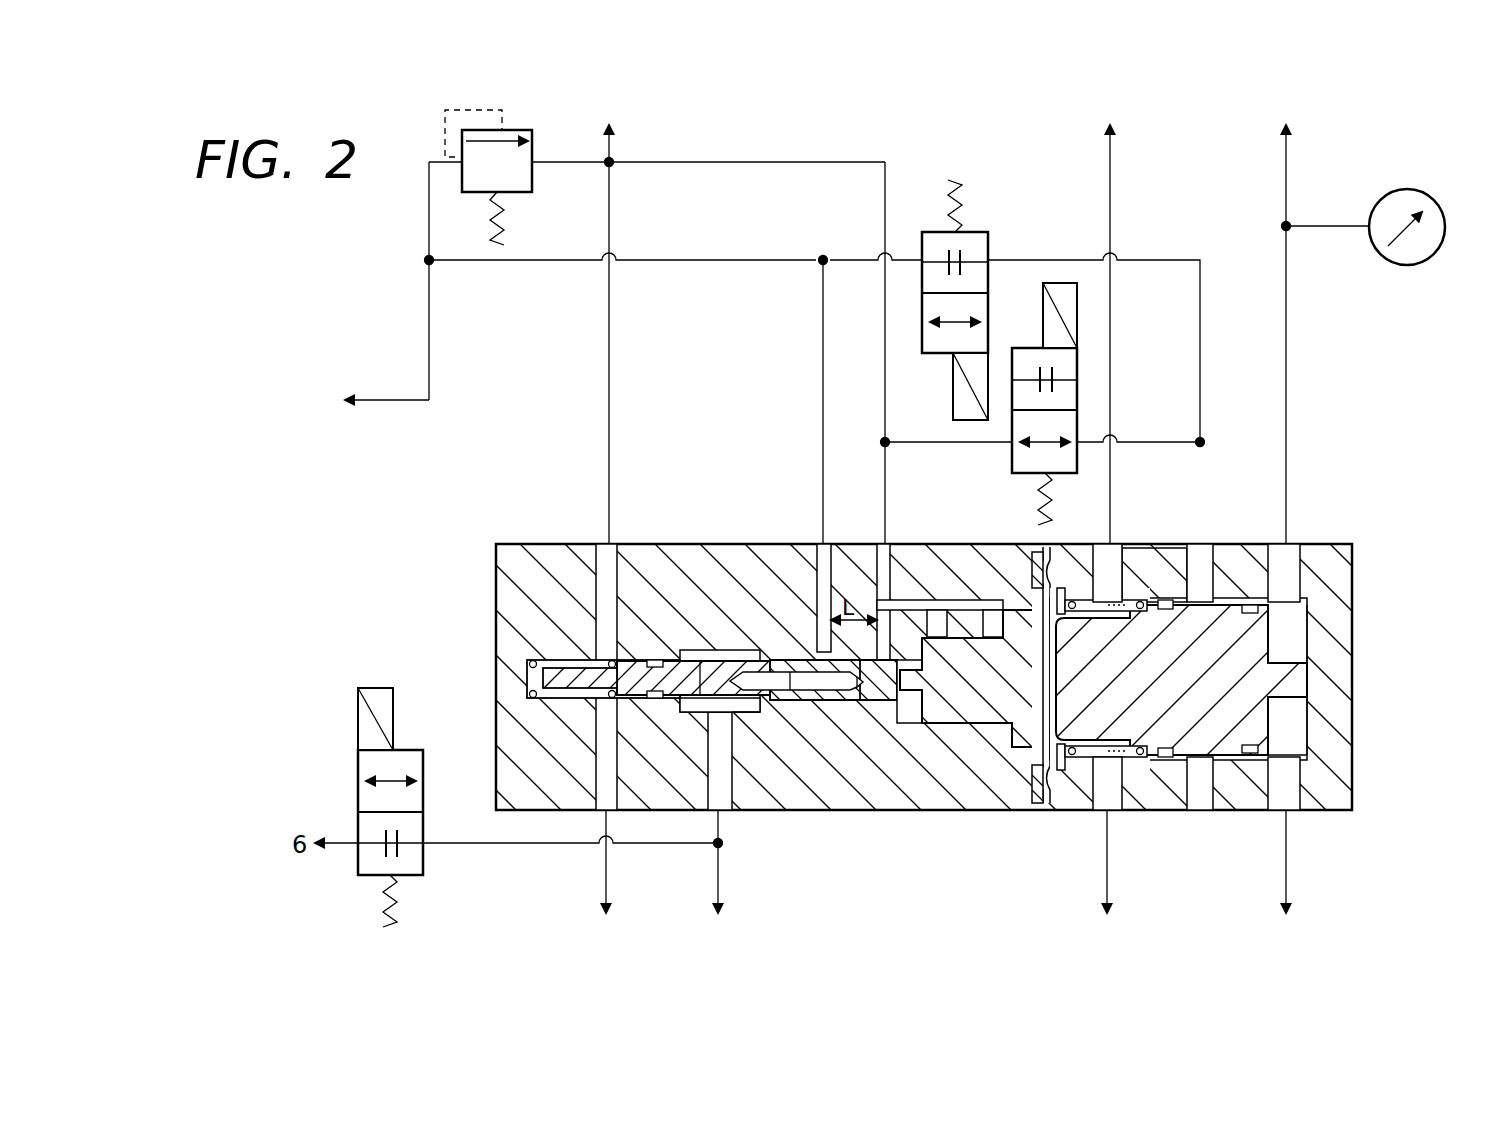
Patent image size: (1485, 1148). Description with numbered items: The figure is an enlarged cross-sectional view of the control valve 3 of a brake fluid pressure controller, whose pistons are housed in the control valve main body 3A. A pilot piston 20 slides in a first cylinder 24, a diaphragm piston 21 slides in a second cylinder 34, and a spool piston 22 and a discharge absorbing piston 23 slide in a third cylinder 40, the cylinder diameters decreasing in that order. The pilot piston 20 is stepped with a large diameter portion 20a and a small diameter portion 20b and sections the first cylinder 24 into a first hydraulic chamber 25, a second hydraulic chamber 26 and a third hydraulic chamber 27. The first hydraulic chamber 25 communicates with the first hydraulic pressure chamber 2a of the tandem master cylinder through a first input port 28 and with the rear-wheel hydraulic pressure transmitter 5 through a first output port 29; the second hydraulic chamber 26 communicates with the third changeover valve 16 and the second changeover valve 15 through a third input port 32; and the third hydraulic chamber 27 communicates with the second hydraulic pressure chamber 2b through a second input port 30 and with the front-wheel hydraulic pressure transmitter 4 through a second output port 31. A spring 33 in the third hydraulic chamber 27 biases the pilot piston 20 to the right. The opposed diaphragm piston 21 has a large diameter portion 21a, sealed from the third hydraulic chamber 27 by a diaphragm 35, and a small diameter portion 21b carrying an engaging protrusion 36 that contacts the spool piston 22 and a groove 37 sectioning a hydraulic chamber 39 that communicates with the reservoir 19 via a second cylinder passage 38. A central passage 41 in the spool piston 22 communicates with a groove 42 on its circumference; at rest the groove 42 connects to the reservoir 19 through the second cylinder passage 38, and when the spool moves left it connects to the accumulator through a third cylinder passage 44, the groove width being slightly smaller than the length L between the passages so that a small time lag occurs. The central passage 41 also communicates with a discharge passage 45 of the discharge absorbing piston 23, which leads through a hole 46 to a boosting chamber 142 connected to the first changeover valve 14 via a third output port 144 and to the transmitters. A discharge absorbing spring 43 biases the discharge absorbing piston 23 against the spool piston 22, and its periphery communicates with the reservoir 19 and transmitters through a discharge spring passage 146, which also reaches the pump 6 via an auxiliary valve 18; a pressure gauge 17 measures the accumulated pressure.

The first hydraulic pressure chamber 2a is at (1288, 314).
The second hydraulic pressure chamber 2b is at (1112, 314).
The control valve 3 is at (488, 598).
The control valve main body 3A is at (1335, 652).
The hydraulic pressure transmitter 4 is at (846, 880).
The hydraulic pressure transmitter 5 is at (1282, 880).
The pump 6 is at (375, 402).
The first changeover valve 14 is at (425, 875).
The second changeover valve 15 is at (985, 232).
The third changeover valve 16 is at (1010, 458).
The pressure gauge 17 is at (1388, 262).
The auxiliary valve 18 is at (520, 130).
The reservoir 19 is at (609, 314).
The pilot piston 20 is at (1250, 630).
The large diameter portion 20a is at (1120, 768).
The small diameter portion 20b is at (1085, 600).
The diaphragm piston 21 is at (945, 726).
The large diameter portion 21a is at (1030, 750).
The small diameter portion 21b is at (920, 728).
The spool piston 22 is at (790, 672).
The discharge absorbing piston 23 is at (575, 660).
The first cylinder 24 is at (1290, 750).
The first hydraulic chamber 25 is at (1300, 712).
The second hydraulic chamber 26 is at (1172, 762).
The third hydraulic chamber 27 is at (1043, 575).
The first input port 28 is at (1290, 560).
The first output port 29 is at (1292, 804).
The second input port 30 is at (1108, 560).
The second output port 31 is at (1110, 802).
The third input port 32 is at (1200, 560).
The spring 33 is at (1050, 792).
The second cylinder 34 is at (1005, 726).
The diaphragm 35 is at (1046, 770).
The engaging protrusion 36 is at (842, 702).
The groove 37 is at (980, 604).
The second cylinder passage 38 is at (882, 558).
The hydraulic chamber 39 is at (872, 702).
The third cylinder 40 is at (630, 585).
The central passage 41 is at (770, 714).
The groove 42 is at (792, 692).
The discharge absorbing spring 43 is at (545, 664).
The third cylinder passage 44 is at (822, 556).
The discharge passage 45 is at (745, 735).
The hole 46 is at (700, 660).
The boosting chamber 142 is at (668, 660).
The third output port 144 is at (712, 800).
The discharge spring passage 146 is at (600, 800).